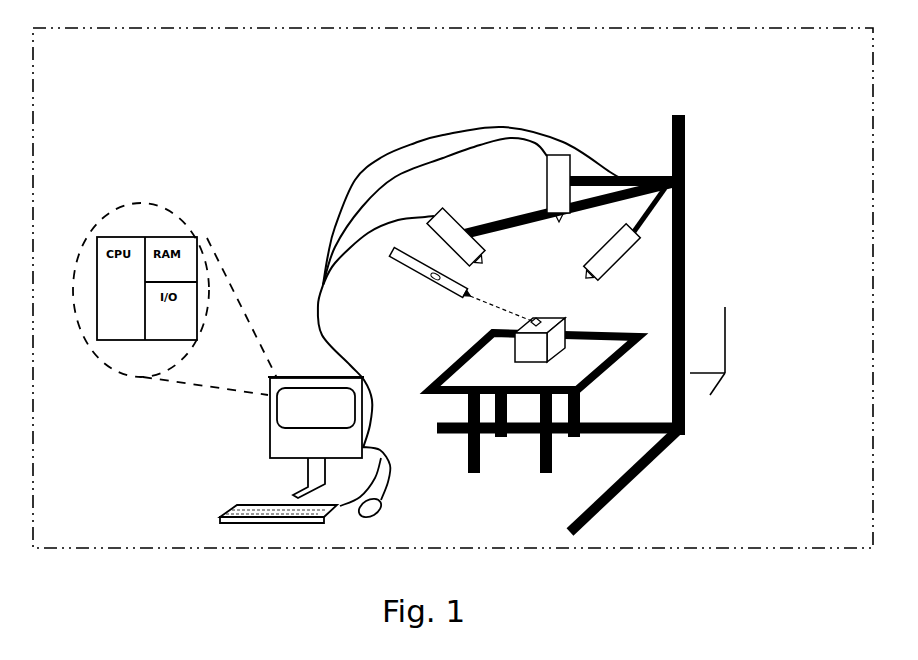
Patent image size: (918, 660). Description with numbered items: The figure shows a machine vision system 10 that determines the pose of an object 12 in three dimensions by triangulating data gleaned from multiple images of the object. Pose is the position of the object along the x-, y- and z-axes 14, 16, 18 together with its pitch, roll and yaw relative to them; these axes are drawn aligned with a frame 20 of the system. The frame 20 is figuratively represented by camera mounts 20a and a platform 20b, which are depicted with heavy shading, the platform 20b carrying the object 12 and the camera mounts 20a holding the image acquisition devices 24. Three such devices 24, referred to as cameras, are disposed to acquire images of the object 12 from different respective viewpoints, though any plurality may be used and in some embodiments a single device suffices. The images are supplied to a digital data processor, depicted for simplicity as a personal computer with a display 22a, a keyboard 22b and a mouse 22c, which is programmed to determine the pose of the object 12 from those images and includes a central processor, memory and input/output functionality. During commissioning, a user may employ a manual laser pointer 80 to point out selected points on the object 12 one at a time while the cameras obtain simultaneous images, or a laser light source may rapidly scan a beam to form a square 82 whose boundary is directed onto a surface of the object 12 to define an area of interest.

The machine vision system 10 is at (246, 152).
The object 12 is at (558, 333).
The x-axis 14 is at (705, 372).
The y-axis 16 is at (718, 381).
The z-axis 18 is at (725, 322).
The frame 20 is at (720, 84).
The camera mounts 20a is at (686, 248).
The platform 20b is at (467, 357).
The display 22a is at (316, 437).
The keyboard 22b is at (250, 498).
The mouse 22c is at (383, 508).
The image acquisition devices 24 is at (547, 178).
The manual laser pointer 80 is at (418, 266).
The square 82 is at (536, 321).